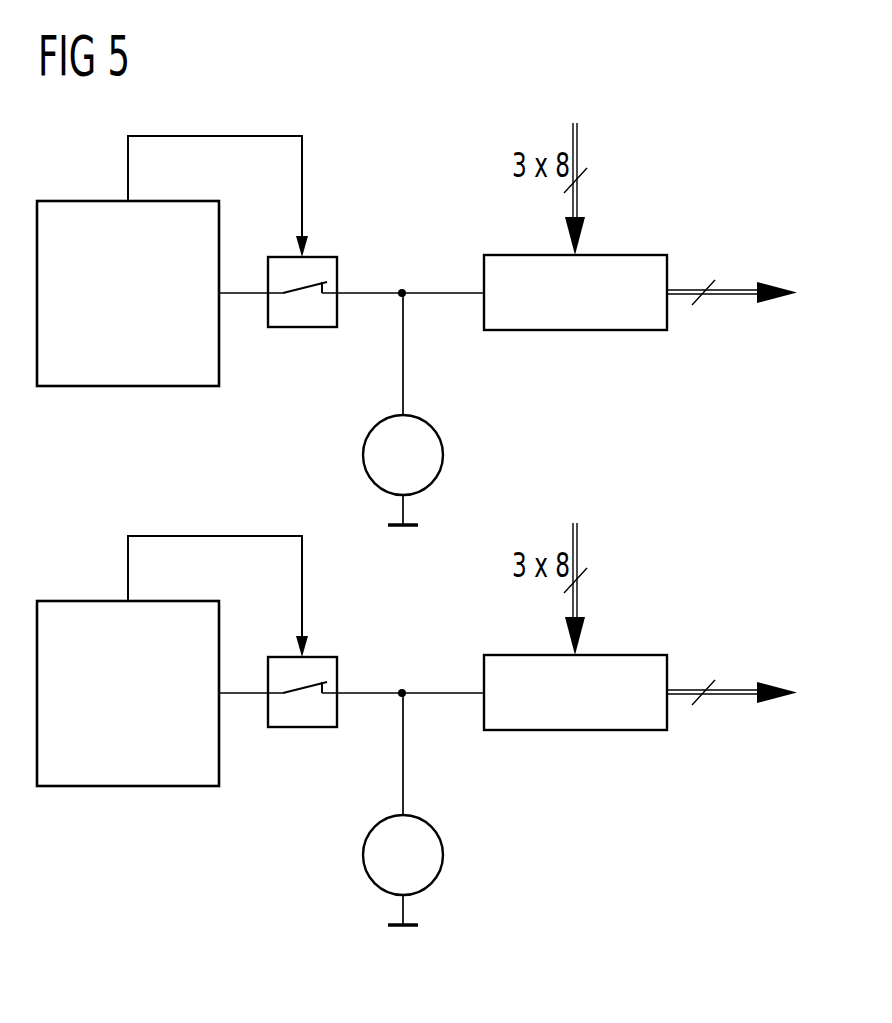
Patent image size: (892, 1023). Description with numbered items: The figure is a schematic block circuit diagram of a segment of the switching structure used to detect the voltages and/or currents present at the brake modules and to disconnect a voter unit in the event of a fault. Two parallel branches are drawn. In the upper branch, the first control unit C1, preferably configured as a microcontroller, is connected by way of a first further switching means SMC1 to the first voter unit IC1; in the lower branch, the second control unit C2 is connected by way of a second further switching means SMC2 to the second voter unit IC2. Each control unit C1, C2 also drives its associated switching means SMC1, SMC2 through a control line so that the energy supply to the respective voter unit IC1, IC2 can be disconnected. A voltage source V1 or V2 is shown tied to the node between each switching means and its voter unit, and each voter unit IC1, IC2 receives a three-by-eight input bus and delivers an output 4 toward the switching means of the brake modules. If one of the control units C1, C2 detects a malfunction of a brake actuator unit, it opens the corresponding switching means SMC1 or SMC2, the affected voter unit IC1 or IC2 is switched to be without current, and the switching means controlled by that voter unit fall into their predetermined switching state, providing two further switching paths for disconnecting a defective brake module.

The output bus / signal line 4 is at (732, 476).
The first control unit C1 is at (128, 293).
The second control unit C2 is at (128, 693).
The first further switching means SMC1 is at (302, 328).
The second further switching means SMC2 is at (302, 728).
The first voter unit IC1 is at (575, 292).
The second voter unit IC2 is at (575, 692).
The voltage source V1 is at (403, 409).
The voltage source V2 is at (403, 809).